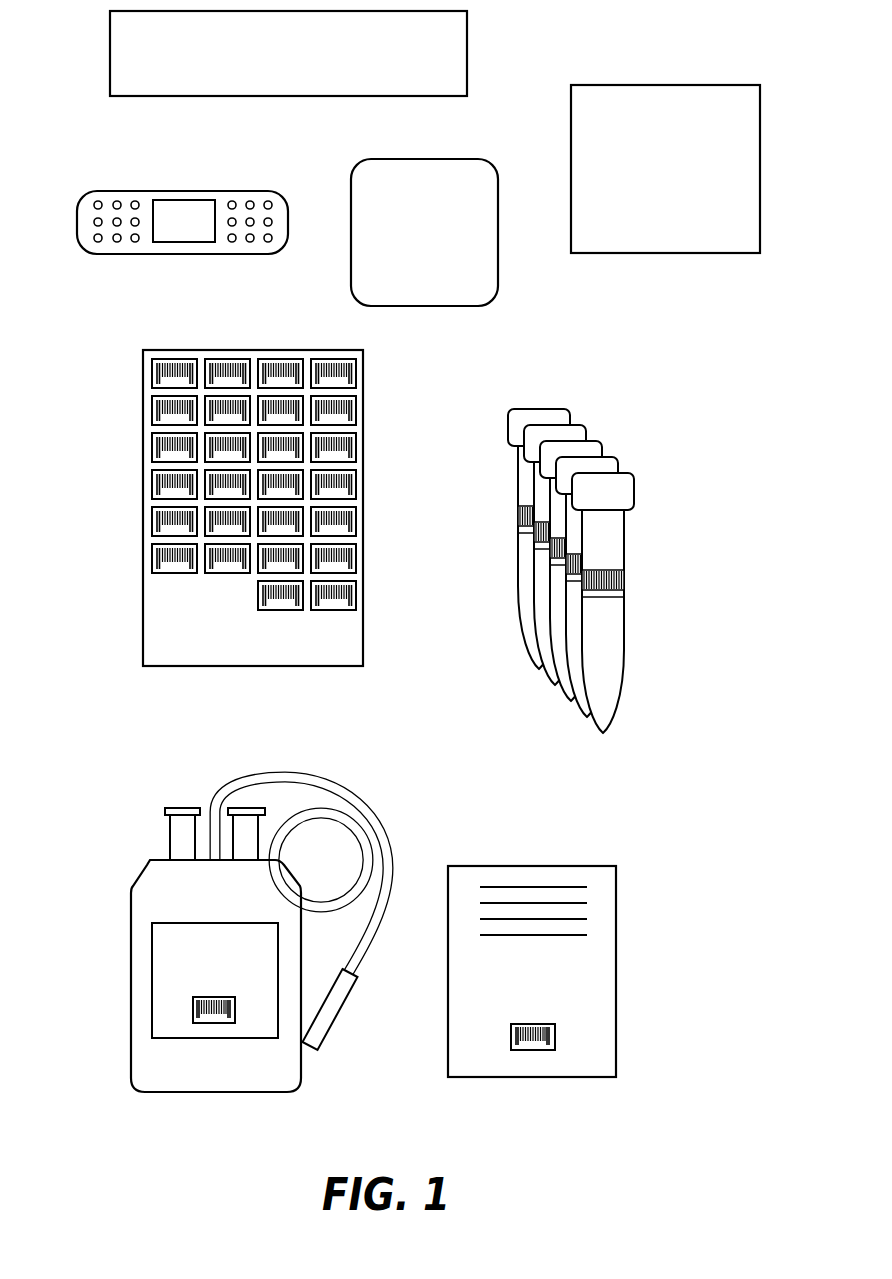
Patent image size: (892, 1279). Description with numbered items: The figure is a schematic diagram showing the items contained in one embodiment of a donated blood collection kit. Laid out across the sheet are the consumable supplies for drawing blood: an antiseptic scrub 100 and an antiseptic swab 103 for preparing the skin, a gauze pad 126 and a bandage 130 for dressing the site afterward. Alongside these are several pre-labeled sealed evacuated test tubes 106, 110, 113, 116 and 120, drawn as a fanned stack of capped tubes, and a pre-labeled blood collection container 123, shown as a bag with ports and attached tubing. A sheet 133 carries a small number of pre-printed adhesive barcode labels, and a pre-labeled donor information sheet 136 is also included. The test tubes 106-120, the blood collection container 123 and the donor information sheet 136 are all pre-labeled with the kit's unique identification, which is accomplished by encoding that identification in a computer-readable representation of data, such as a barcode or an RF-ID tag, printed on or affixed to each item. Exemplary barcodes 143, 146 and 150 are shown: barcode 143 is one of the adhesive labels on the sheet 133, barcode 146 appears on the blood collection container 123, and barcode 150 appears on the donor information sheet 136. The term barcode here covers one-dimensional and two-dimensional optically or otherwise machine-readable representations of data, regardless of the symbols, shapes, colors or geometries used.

The antiseptic scrub 100 is at (445, 277).
The antiseptic swab 103 is at (310, 82).
The pre-labeled sealed evacuated test tube 106 is at (518, 633).
The pre-labeled sealed evacuated test tube 110 is at (546, 677).
The pre-labeled sealed evacuated test tube 113 is at (561, 698).
The pre-labeled sealed evacuated test tube 116 is at (580, 717).
The pre-labeled sealed evacuated test tube 120 is at (601, 734).
The pre-labeled blood collection container 123 is at (207, 934).
The gauze pad 126 is at (687, 198).
The bandage 130 is at (203, 233).
The sheet of pre-printed adhesive barcode labels 133 is at (306, 508).
The pre-labeled donor information sheet 136 is at (585, 998).
The barcode 143 is at (353, 517).
The barcode 146 is at (193, 1008).
The barcode 150 is at (530, 1050).